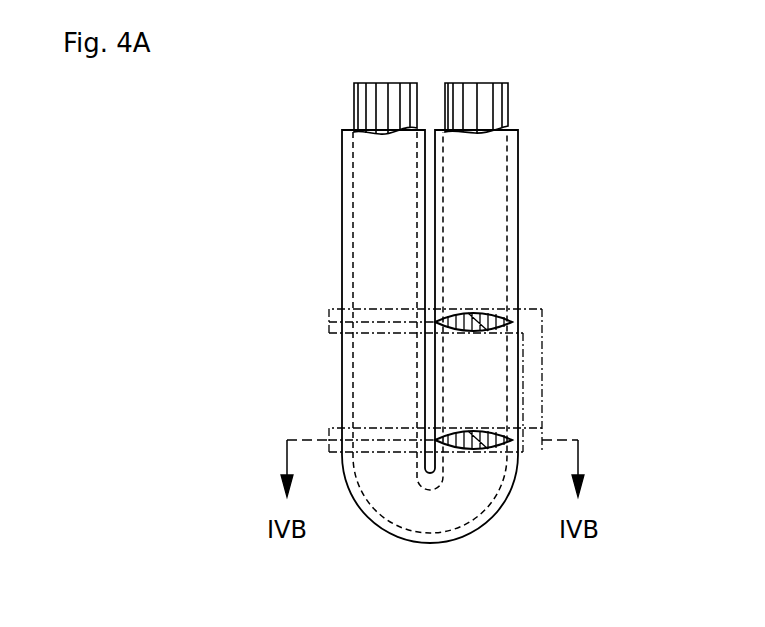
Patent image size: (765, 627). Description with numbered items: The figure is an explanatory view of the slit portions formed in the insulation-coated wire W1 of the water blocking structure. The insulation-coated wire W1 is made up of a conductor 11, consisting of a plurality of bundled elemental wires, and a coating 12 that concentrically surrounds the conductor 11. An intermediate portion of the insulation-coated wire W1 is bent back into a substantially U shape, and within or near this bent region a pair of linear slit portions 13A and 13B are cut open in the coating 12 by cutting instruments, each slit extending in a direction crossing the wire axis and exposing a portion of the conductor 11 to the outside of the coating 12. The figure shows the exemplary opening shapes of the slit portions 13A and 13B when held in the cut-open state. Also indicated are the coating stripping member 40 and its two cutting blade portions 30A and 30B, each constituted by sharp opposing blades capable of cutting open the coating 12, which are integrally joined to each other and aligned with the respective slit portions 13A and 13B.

The insulation-coated wire W1 is at (342, 187).
The conductor 11 is at (509, 107).
The coating 12 is at (518, 168).
The slit portion 13A is at (497, 434).
The slit portion 13B is at (497, 316).
The cutting blade portion 30A is at (329, 428).
The cutting blade portion 30B is at (329, 309).
The coating stripping member 40 is at (546, 366).